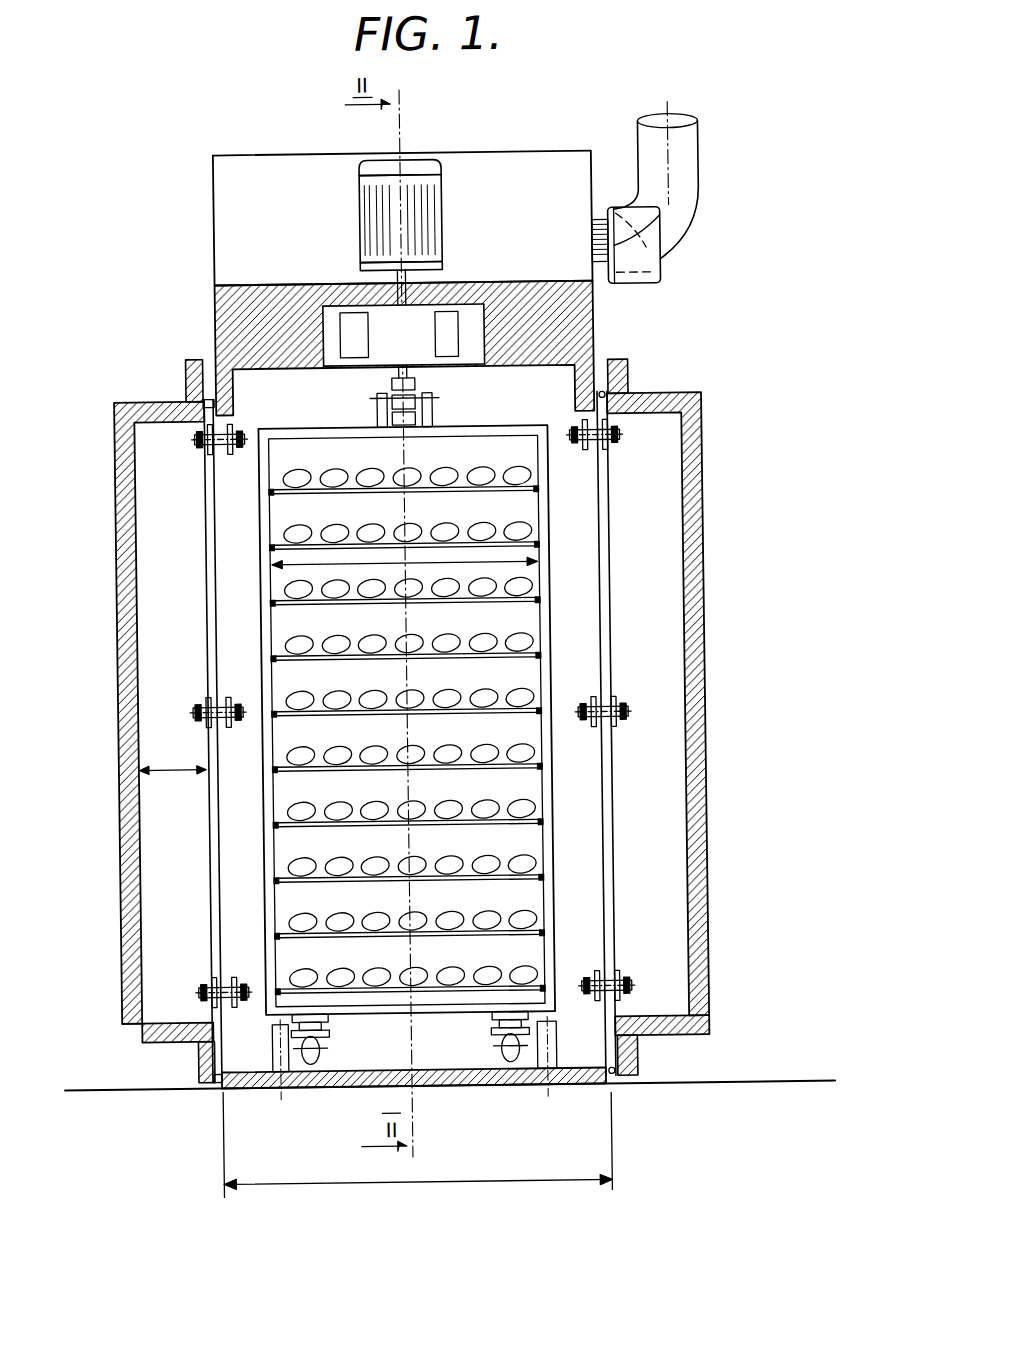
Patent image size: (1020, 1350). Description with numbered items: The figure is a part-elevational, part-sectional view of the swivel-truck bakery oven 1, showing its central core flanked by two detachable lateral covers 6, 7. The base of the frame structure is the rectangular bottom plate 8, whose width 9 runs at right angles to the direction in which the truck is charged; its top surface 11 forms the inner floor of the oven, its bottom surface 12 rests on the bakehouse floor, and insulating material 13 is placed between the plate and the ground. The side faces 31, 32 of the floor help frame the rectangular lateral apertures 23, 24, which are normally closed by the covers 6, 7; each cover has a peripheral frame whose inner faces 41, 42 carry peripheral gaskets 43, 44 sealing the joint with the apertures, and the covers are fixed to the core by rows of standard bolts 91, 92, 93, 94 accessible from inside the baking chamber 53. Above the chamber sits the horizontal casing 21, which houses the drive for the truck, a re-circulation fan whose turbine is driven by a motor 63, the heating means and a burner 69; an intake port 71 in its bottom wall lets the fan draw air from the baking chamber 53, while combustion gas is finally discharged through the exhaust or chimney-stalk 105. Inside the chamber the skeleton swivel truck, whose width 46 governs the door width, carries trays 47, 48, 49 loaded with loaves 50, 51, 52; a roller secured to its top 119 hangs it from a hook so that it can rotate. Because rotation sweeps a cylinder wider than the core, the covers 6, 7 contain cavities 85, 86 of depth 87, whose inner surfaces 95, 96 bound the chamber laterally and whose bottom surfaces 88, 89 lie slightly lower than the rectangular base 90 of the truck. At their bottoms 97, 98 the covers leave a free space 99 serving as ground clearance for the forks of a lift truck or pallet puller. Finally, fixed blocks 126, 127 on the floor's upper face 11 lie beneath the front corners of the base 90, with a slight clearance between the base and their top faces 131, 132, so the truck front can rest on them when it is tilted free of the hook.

The swivel-truck bakery oven 1 is at (158, 192).
The detachable lateral cover 6 is at (102, 455).
The detachable lateral cover 7 is at (720, 506).
The bottom plate 8 is at (460, 1089).
The width of floor 9 is at (494, 1184).
The top surface of floor 11 is at (232, 1058).
The bottom surface of floor 12 is at (325, 1087).
The insulating material 13 is at (513, 1089).
The horizontal casing 21 is at (492, 173).
The lateral aperture 23 is at (230, 468).
The lateral aperture 24 is at (588, 492).
The side face of floor 31 is at (213, 1077).
The side face of floor 32 is at (607, 1091).
The inner face of peripheral frame 41 is at (195, 1052).
The inner face of peripheral frame 42 is at (661, 1043).
The peripheral gasket 43 is at (212, 395).
The peripheral gasket 44 is at (632, 393).
The width of swivel truck 46 is at (482, 561).
The tray 47 is at (506, 596).
The tray 48 is at (511, 653).
The tray 49 is at (510, 713).
The loaf 50 is at (521, 591).
The loaf 51 is at (516, 651).
The loaf 52 is at (510, 709).
The baking chamber 53 is at (574, 360).
The motor 63 is at (434, 185).
The burner 69 is at (657, 256).
The intake port 71 is at (488, 336).
The cavity 85 is at (152, 544).
The cavity 86 is at (664, 811).
The depth of cavity 87 is at (174, 775).
The bottom surface of cavity 88 is at (166, 1037).
The bottom surface of cavity 89 is at (673, 1018).
The rectangular base 90 is at (476, 1014).
The bolt 91 is at (208, 437).
The bolt 92 is at (208, 709).
The bolt 93 is at (619, 431).
The bolt 94 is at (617, 716).
The inner surface of cavity 95 is at (146, 1002).
The inner surface of cavity 96 is at (671, 1000).
The bottom of lateral cover 97 is at (136, 1036).
The bottom of lateral cover 98 is at (663, 1038).
The free space 99 is at (177, 1075).
The exhaust or chimney-stalk 105 is at (690, 176).
The top of swivel truck 119 is at (304, 427).
The fixed block 126 is at (270, 1048).
The fixed block 127 is at (548, 1038).
The top face of block 131 is at (272, 1020).
The top face of block 132 is at (552, 1024).